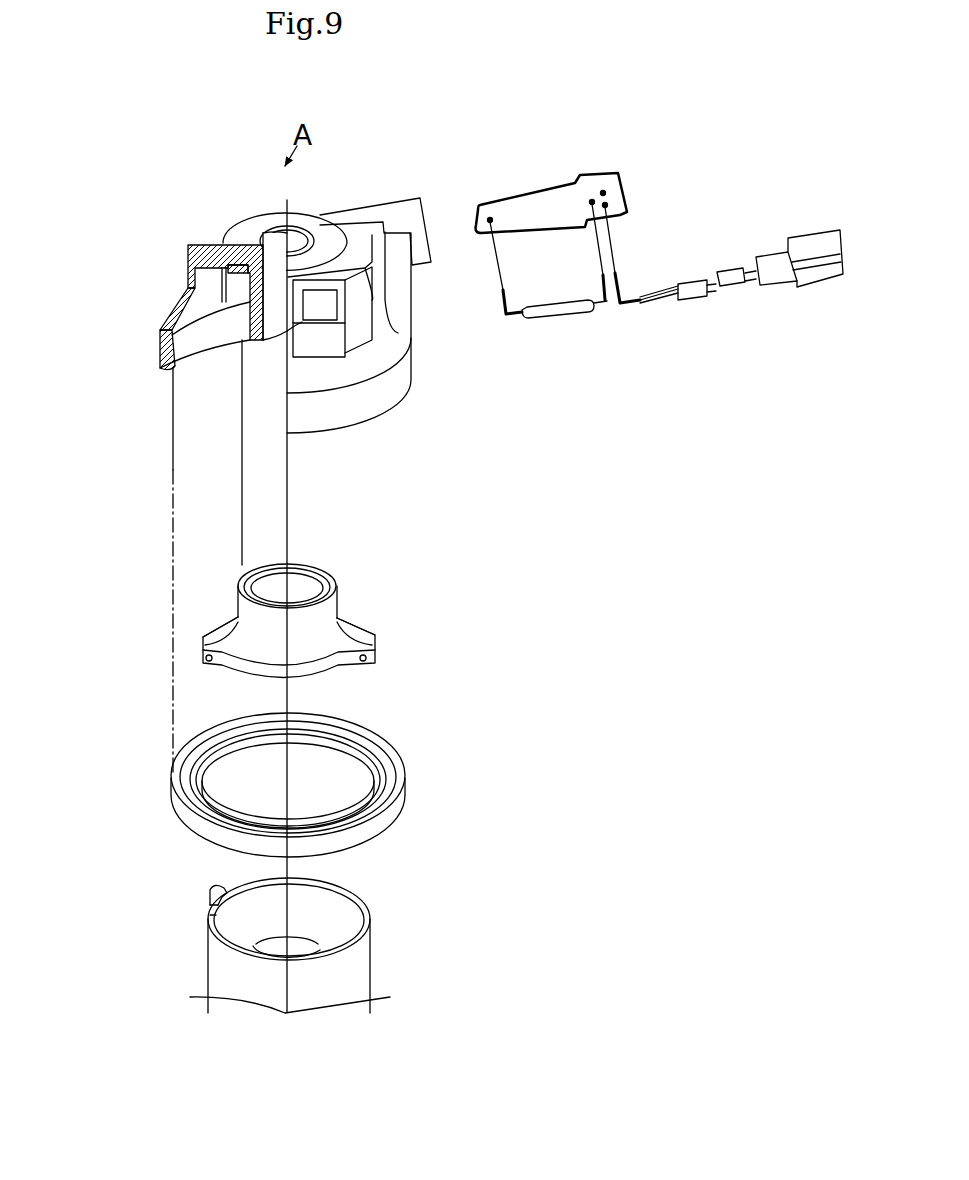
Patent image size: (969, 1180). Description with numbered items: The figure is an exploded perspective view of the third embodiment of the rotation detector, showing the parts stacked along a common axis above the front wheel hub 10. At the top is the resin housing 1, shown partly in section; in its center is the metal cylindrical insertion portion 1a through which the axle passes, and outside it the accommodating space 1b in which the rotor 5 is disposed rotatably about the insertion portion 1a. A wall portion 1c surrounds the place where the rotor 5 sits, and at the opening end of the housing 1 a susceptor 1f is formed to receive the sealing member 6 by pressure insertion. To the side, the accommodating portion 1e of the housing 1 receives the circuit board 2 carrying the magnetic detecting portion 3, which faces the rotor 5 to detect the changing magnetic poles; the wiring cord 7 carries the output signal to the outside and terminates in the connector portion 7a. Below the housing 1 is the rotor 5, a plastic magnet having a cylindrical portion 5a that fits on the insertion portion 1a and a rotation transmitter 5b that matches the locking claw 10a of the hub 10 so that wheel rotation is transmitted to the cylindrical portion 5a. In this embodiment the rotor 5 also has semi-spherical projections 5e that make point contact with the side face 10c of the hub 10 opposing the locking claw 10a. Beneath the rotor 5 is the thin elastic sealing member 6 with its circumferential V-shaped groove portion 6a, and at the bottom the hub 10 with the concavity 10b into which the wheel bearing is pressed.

The housing 1 is at (216, 230).
The insertion portion 1a is at (248, 339).
The accommodating space 1b is at (205, 330).
The wall portion 1c is at (224, 283).
The accommodating portion 1e is at (397, 210).
The susceptor 1f is at (168, 357).
The circuit board 2 is at (533, 204).
The magnetic detecting portion 3 is at (556, 314).
The rotor 5 is at (358, 607).
The cylindrical portion 5a is at (318, 622).
The rotation transmitter 5b is at (374, 640).
The projections 5e is at (203, 658).
The sealing member 6 is at (385, 815).
The groove portion 6a is at (391, 768).
The wiring cord 7 is at (737, 284).
The connector portion 7a is at (800, 286).
The hub 10 is at (221, 965).
The locking claw 10a is at (208, 900).
The concavity 10b is at (320, 947).
The side face 10c is at (212, 910).